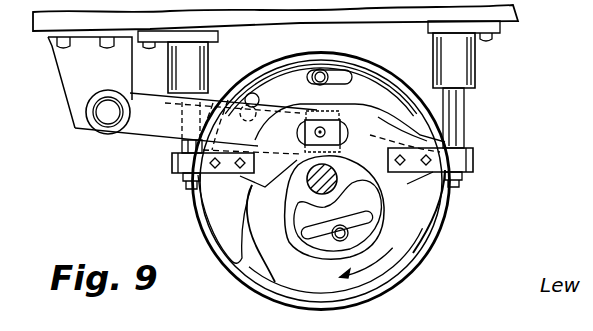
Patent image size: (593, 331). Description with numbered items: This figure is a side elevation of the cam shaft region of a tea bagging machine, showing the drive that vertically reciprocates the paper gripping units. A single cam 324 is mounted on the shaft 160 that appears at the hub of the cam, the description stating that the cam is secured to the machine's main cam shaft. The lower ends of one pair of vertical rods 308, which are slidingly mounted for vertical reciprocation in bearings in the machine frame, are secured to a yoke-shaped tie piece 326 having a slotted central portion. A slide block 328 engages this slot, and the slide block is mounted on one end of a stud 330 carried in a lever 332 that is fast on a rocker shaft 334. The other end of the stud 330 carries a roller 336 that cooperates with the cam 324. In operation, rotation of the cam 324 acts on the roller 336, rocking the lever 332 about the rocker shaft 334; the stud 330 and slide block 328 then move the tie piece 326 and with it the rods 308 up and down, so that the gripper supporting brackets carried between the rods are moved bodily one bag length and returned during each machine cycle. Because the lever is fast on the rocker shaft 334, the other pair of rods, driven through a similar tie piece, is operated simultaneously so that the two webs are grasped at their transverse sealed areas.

The hub shaft 160 is at (312, 186).
The rods 308 is at (180, 143).
The cam 324 is at (412, 268).
The yoke-shaped tie piece 326 is at (407, 183).
The slide block 328 is at (340, 114).
The stud 330 is at (306, 118).
The lever 332 is at (147, 132).
The rocker shaft 334 is at (110, 119).
The roller 336 is at (327, 128).